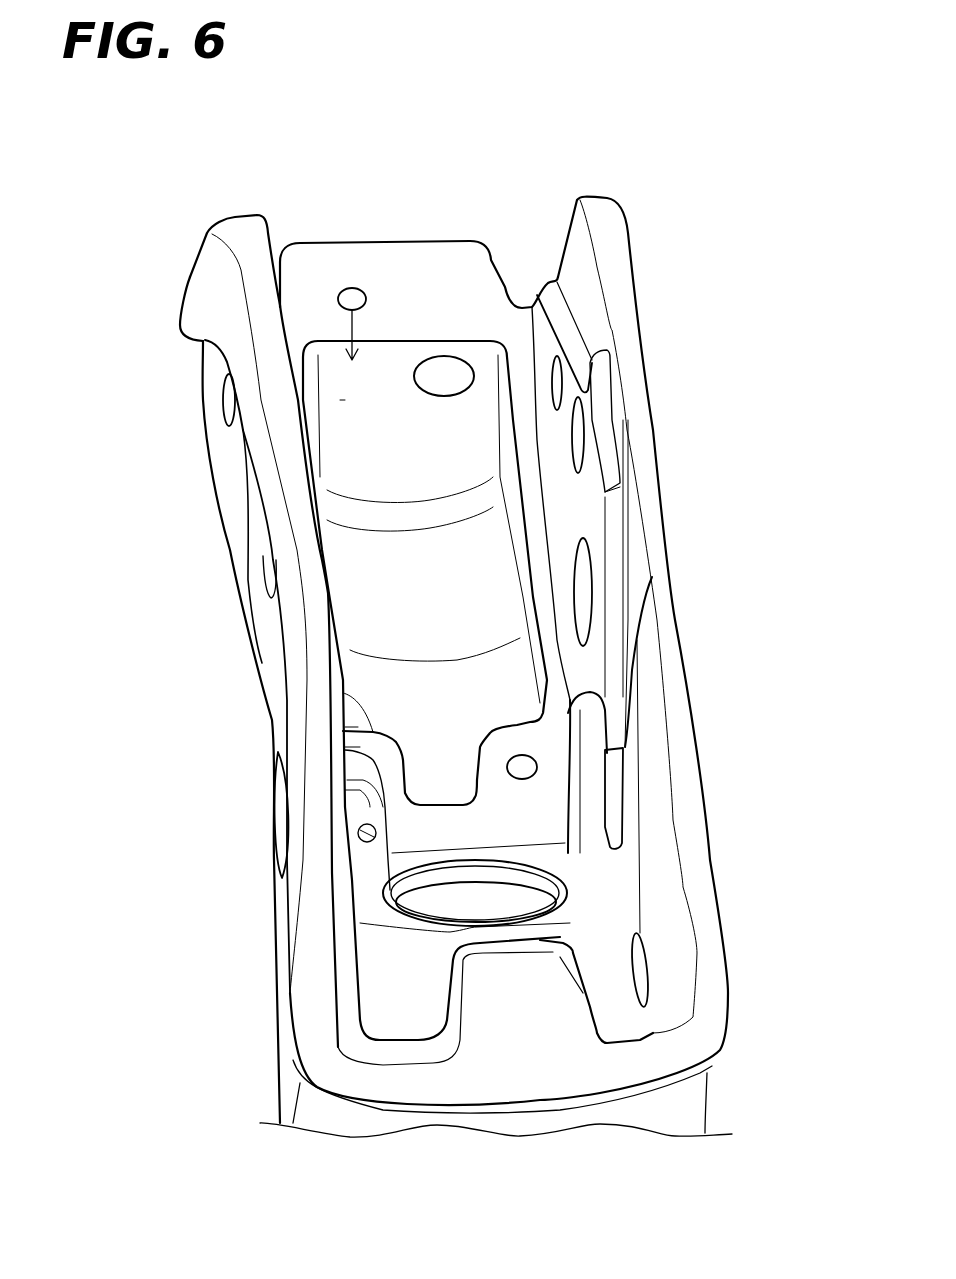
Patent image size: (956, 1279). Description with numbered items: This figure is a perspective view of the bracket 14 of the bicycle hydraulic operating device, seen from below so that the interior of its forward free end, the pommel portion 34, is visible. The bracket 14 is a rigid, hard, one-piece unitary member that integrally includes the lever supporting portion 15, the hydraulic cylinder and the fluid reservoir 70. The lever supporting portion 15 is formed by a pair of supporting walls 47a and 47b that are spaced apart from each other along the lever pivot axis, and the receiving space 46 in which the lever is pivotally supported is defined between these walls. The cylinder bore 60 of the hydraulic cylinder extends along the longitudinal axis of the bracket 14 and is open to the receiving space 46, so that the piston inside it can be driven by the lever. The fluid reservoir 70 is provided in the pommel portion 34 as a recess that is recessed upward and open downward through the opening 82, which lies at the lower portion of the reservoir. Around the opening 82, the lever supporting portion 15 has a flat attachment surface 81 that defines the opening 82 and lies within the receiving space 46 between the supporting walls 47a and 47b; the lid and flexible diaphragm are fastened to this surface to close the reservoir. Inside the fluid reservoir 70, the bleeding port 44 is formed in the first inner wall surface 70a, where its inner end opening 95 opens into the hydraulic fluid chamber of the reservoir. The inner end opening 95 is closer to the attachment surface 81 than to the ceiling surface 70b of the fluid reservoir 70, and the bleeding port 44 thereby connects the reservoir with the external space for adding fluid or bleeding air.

The bracket 14 is at (676, 183).
The lever supporting portion 15 is at (186, 352).
The pommel portion 34 is at (221, 566).
The bleeding port 44 is at (443, 372).
The receiving space 46 is at (542, 230).
The supporting wall 47a is at (247, 360).
The supporting wall 47b is at (590, 308).
The cylinder bore 60 is at (502, 910).
The fluid reservoir 70 is at (379, 326).
The first inner wall surface 70a is at (399, 370).
The ceiling surface 70b is at (463, 572).
The attachment surface 81 is at (300, 247).
The opening 82 is at (297, 272).
The inner end opening 95 is at (480, 386).